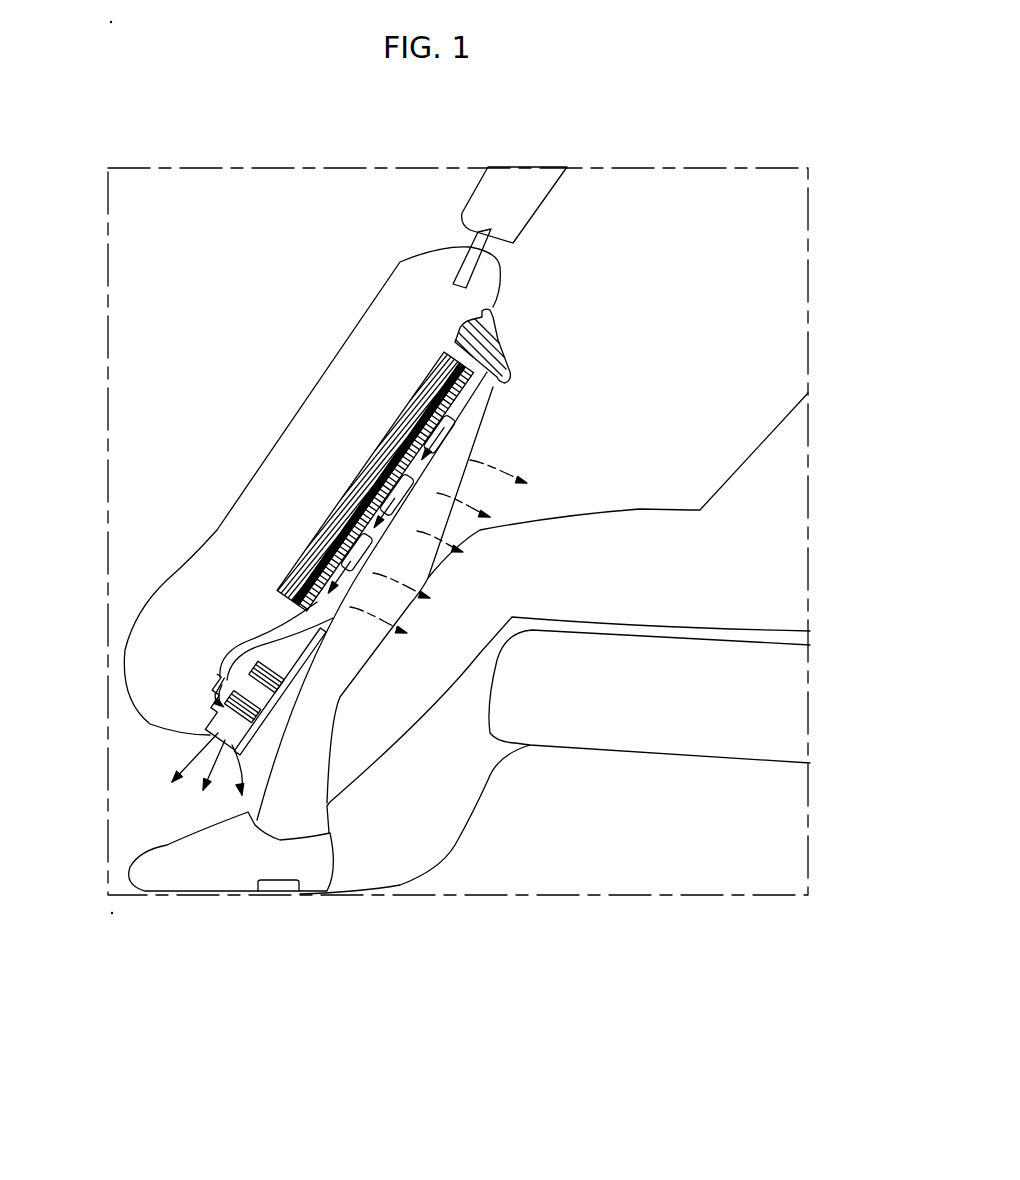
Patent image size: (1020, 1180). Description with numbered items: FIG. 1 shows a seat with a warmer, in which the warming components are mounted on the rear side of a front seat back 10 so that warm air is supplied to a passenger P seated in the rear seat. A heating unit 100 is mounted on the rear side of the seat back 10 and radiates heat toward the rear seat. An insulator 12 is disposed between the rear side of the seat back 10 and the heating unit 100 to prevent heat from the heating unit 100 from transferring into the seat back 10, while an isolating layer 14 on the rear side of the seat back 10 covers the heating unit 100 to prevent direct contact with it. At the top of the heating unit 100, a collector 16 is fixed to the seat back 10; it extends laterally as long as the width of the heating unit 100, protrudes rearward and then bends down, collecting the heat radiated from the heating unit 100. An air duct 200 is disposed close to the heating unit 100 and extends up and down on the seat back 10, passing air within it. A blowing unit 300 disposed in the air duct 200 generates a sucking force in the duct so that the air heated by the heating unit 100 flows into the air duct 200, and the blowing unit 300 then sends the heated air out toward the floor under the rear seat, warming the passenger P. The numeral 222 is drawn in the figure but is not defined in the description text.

The seat back 10 is at (375, 333).
The insulator 12 is at (352, 472).
The isolating layer 14 is at (282, 632).
The collector 16 is at (490, 335).
The heating unit 100 is at (436, 366).
The air duct 200 is at (389, 505).
The discharge port 222 is at (480, 407).
The blowing unit 300 is at (256, 675).
The passenger P is at (713, 597).